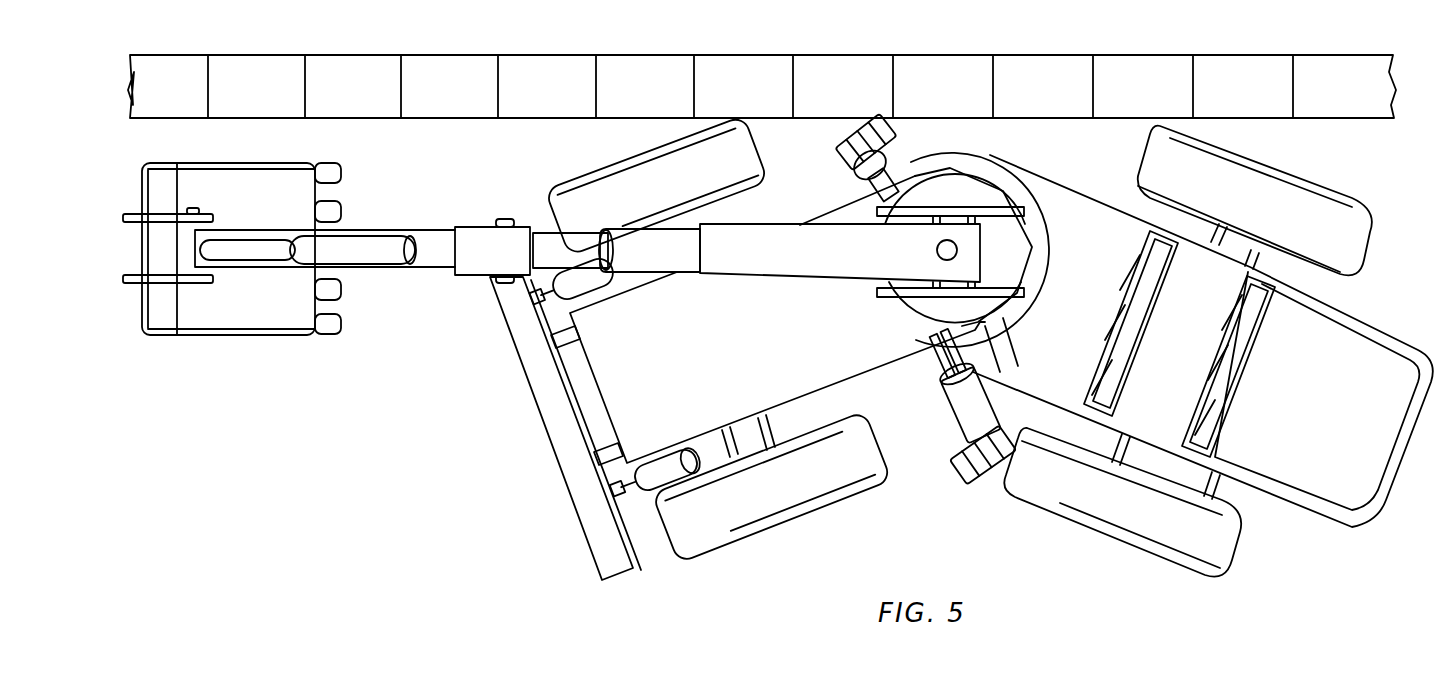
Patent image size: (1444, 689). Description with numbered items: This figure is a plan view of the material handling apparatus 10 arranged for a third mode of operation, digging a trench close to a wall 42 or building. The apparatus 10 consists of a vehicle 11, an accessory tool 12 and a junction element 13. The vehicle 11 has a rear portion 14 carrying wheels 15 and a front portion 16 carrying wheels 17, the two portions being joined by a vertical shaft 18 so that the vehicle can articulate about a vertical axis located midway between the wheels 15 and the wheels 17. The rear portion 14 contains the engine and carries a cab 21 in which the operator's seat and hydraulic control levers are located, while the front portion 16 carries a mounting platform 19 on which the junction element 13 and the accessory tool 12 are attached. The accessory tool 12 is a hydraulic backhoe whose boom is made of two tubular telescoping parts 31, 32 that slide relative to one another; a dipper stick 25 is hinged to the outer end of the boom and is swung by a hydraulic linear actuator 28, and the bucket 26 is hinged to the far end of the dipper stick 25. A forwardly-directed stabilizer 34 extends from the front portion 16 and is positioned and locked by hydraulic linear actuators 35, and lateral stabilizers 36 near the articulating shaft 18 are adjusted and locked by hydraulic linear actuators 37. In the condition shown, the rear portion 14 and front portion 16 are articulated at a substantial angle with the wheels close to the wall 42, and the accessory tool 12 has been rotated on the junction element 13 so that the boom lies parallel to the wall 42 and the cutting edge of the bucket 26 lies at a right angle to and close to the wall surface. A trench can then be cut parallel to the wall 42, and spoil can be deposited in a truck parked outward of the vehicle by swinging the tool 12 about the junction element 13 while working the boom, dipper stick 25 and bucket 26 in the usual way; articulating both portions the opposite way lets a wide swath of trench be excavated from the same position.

The material handling apparatus 10 is at (1323, 182).
The vehicle 11 is at (1060, 502).
The accessory tool 12 is at (362, 245).
The junction element 13 is at (985, 165).
The rear portion 14 is at (1043, 388).
The wheels 15 is at (1202, 351).
The front portion 16 is at (617, 413).
The wheels 17 is at (546, 197).
The vertical shaft 18 is at (957, 250).
The mounting platform 19 is at (862, 272).
The cab 21 is at (1170, 272).
The dipper stick 25 is at (440, 263).
The bucket 26 is at (272, 322).
The hydraulic linear actuator 28 is at (372, 240).
The tubular telescoping part 31 is at (550, 242).
The tubular telescoping part 32 is at (636, 238).
The forwardly-directed stabilizer 34 is at (577, 505).
The hydraulic linear actuators 35 is at (606, 275).
The stabilizers 36 is at (843, 142).
The hydraulic linear actuators 37 is at (857, 170).
The wall 42 is at (852, 70).